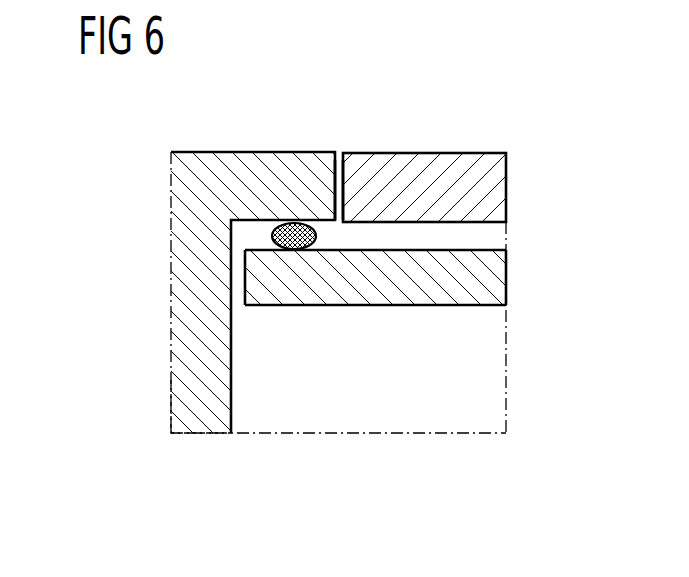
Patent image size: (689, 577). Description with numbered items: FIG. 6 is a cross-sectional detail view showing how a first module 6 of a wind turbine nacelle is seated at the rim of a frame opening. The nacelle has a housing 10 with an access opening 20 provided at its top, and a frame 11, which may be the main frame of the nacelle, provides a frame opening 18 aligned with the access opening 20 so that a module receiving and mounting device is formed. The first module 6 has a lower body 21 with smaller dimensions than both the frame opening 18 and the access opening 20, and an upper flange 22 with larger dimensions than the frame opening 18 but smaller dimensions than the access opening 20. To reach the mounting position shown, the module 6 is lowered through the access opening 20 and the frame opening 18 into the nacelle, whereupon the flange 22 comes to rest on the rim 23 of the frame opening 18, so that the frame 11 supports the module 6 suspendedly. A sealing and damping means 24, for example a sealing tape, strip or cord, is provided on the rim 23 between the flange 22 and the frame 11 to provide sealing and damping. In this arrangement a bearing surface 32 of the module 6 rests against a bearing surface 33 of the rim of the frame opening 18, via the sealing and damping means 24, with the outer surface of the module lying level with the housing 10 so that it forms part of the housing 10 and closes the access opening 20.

The first module 6 is at (181, 180).
The housing 10 is at (413, 163).
The frame 11 is at (490, 277).
The frame opening 18 is at (238, 292).
The access opening 20 is at (339, 220).
The lower body 21 is at (182, 400).
The upper flange 22 is at (268, 160).
The rim 23 is at (282, 288).
The sealing and damping means 24 is at (293, 224).
The bearing surface 32 is at (246, 222).
The bearing surface 33 is at (333, 255).